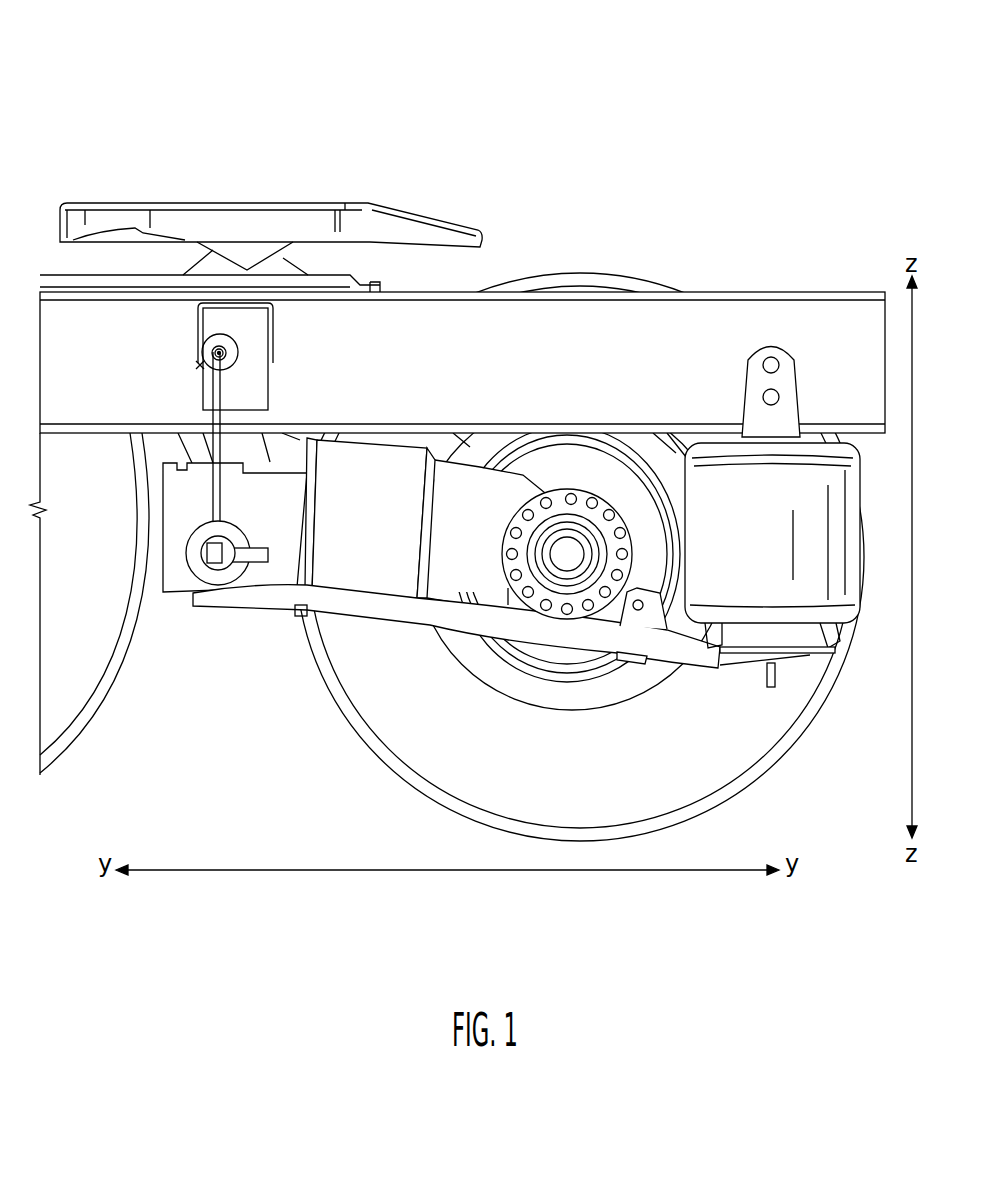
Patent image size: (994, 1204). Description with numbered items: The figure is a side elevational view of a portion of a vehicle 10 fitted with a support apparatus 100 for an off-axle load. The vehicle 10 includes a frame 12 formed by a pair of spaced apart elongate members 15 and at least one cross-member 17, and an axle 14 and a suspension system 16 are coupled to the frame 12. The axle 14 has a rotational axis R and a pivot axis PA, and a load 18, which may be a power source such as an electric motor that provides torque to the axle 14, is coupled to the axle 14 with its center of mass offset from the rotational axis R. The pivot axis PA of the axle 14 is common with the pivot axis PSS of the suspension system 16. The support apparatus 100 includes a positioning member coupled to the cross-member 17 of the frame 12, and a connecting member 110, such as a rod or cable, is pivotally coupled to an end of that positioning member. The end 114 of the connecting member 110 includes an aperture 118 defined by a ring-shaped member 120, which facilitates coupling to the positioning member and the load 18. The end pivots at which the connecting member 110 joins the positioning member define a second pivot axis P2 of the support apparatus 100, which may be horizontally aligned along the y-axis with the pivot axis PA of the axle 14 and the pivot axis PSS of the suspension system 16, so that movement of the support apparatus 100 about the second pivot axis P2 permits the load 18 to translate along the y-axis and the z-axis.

The vehicle 10 is at (136, 113).
The frame 12 is at (740, 292).
The axle 14 is at (622, 534).
The elongate members 15 is at (826, 325).
The suspension system 16 is at (387, 606).
The cross-member 17 is at (272, 337).
The load 18 is at (391, 533).
The support apparatus 100 is at (202, 364).
The connecting member 110 is at (216, 502).
The end of connecting member 114 is at (200, 366).
The aperture 118 is at (220, 352).
The ring-shaped member 120 is at (233, 360).
The second pivot axis P2 is at (219, 352).
The pivot axis of the axle PA is at (218, 560).
The pivot axis of the suspension system PSS is at (218, 560).
The rotational axis R is at (567, 553).